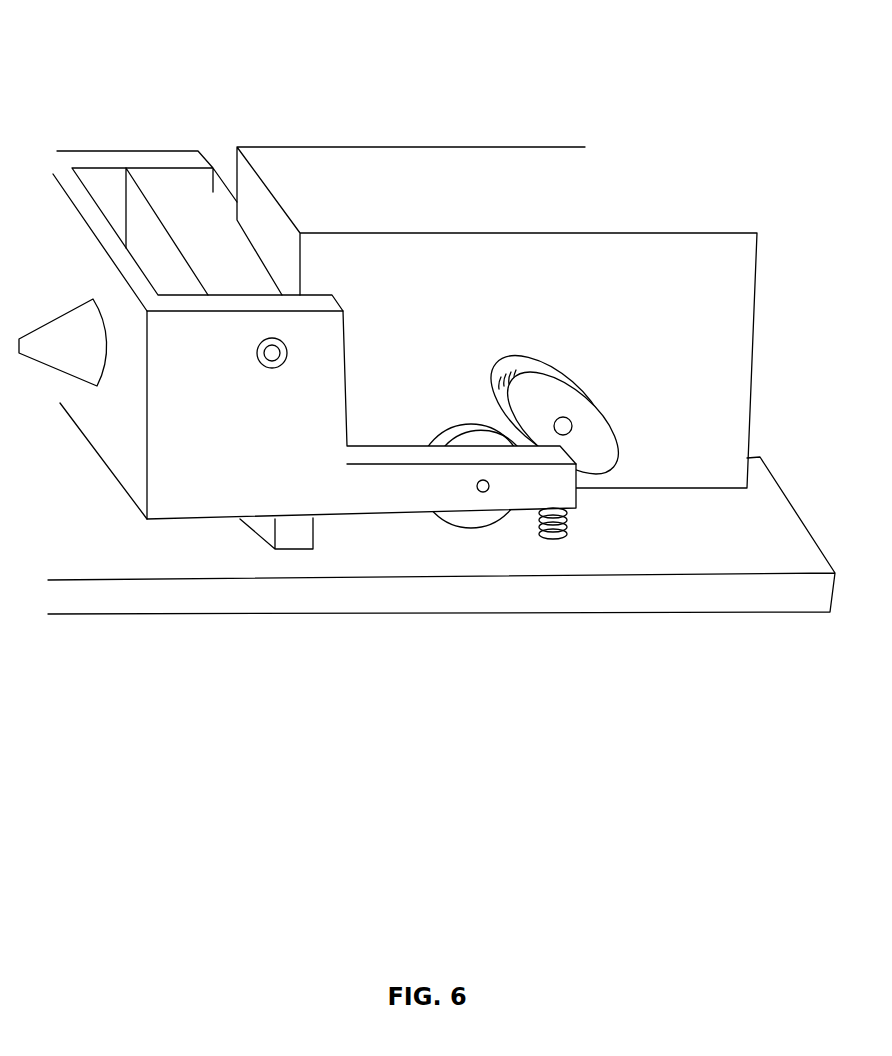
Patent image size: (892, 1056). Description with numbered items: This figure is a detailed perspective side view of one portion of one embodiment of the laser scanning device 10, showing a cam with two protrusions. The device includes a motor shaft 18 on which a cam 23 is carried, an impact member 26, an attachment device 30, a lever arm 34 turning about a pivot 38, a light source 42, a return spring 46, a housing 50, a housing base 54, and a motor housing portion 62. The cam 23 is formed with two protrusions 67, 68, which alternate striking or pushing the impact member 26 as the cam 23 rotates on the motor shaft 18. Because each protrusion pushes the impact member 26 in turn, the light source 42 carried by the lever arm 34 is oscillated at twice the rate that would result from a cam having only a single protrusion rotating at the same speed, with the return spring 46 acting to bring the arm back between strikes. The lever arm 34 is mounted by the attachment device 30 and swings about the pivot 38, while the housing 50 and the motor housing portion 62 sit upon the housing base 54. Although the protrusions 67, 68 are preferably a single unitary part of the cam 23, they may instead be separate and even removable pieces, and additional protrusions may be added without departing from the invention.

The laser scanning device 10 is at (462, 716).
The motor shaft 18 is at (572, 422).
The cam 23 is at (558, 392).
The impact member 26 is at (472, 528).
The attachment device 30 is at (485, 492).
The lever arm 34 is at (260, 482).
The pivot 38 is at (272, 360).
The light source 42 is at (72, 362).
The return spring 46 is at (565, 532).
The housing 50 is at (192, 208).
The housing base 54 is at (112, 600).
The motor housing portion 62 is at (685, 275).
The protrusion 67 is at (606, 466).
The protrusion 68 is at (507, 368).